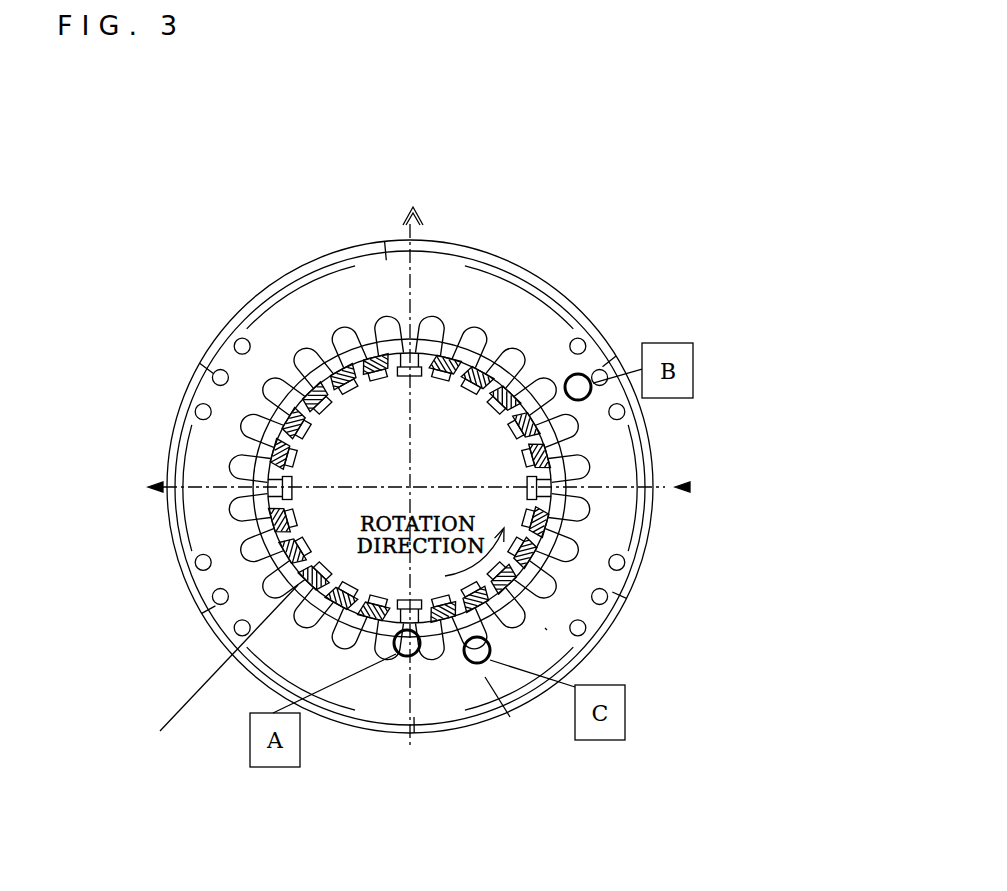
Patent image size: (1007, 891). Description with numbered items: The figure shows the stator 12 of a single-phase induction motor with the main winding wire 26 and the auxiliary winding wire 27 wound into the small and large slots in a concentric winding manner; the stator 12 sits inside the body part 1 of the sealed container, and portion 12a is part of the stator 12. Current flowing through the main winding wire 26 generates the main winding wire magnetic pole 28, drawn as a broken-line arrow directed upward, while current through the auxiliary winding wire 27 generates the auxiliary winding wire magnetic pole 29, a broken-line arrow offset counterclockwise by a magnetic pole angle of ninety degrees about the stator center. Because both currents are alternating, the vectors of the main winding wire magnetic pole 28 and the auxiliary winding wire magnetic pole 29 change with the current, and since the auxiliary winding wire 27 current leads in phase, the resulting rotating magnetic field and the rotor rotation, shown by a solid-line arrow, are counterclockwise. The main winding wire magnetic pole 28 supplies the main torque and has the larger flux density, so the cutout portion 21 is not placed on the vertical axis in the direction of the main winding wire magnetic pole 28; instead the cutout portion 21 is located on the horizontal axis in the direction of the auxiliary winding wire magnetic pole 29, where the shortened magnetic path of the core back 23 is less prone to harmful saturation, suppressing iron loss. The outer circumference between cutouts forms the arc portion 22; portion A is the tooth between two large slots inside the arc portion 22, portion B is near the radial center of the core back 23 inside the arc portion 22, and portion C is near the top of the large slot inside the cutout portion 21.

The body part 1 is at (308, 268).
The stator 12 is at (353, 290).
The stator core segment 12a is at (547, 630).
The cutout portion 21 is at (285, 293).
The arc portion 22 is at (384, 241).
The core back 23 is at (530, 708).
The main winding wire 26 is at (282, 425).
The auxiliary winding wire 27 is at (418, 350).
The main winding wire magnetic pole 28 is at (415, 237).
The auxiliary winding wire magnetic pole 29 is at (676, 482).